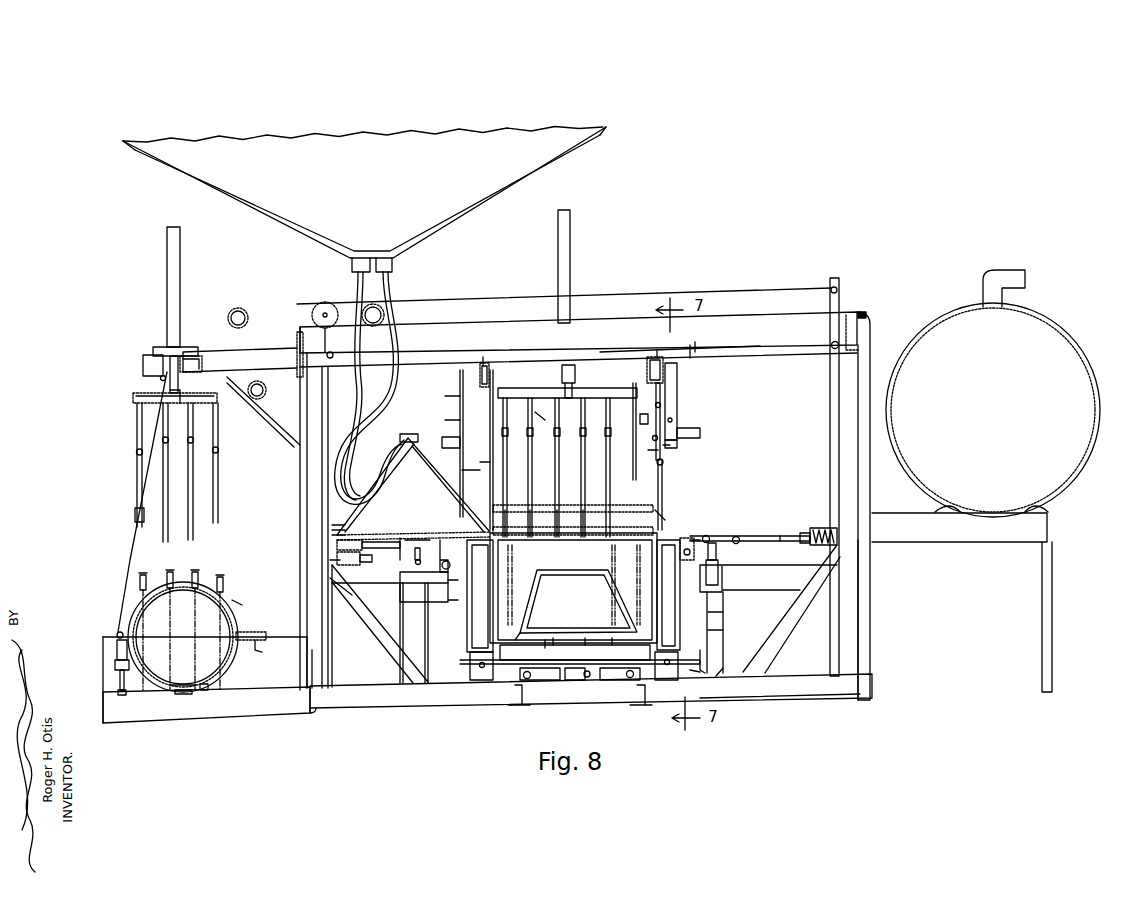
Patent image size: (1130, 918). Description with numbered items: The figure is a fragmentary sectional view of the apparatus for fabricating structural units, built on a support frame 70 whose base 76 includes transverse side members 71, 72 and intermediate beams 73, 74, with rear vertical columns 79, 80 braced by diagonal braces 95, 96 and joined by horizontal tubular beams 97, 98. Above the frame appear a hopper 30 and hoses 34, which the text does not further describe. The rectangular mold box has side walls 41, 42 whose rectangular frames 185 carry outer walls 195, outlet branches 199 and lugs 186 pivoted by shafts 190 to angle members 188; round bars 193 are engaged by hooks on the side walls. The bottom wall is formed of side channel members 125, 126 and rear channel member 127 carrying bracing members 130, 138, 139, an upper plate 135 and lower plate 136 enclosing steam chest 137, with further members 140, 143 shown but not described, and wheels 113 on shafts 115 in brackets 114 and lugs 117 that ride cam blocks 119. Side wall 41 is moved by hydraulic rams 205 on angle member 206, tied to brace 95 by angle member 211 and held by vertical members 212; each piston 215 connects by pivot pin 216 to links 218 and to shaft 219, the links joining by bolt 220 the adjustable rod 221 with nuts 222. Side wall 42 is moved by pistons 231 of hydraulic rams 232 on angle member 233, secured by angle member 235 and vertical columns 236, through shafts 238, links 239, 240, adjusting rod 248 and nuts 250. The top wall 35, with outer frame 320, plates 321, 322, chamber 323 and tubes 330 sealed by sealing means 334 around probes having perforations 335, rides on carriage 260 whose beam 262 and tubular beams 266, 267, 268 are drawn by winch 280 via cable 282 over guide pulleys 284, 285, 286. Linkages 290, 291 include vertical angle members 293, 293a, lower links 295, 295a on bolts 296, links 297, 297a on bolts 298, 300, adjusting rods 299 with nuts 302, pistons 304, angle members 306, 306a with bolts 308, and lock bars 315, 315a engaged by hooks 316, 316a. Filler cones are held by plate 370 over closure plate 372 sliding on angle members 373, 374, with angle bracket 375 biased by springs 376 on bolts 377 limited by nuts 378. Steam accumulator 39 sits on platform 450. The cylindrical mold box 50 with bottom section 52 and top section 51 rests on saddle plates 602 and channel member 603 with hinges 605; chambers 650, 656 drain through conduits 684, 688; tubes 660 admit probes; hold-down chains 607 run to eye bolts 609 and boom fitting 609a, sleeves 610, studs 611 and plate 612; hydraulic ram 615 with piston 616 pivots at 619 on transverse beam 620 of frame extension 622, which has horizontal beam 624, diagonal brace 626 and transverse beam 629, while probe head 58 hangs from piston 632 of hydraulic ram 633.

The hopper funnel 30 is at (568, 140).
The flexible hose 34 is at (388, 292).
The hydraulic ram 633 is at (181, 270).
The guide pulley 284 is at (840, 286).
The cable 282 is at (738, 290).
The longitudinal channel member 262 is at (604, 349).
The support frame 70 is at (868, 310).
The guide pulley 285 is at (862, 342).
The carriage 260 is at (710, 346).
The nut 302 is at (480, 358).
The winch 280 is at (325, 302).
The transverse beam 620 is at (158, 346).
The frame extension 622 is at (136, 353).
The transverse beam 629 is at (196, 346).
The piston 632 is at (190, 378).
The horizontal beam 624 is at (265, 352).
The pivot 619 is at (160, 380).
The probe head 58 is at (180, 395).
The guide pulley 286 is at (330, 360).
The diagonal brace 626 is at (276, 427).
The hydraulic ram 615 is at (128, 521).
The piston 616 is at (127, 566).
The hold-down chain 607 is at (155, 487).
The tube 660 is at (190, 485).
The chamber 656 is at (222, 552).
The cylindrical mold box 50 is at (158, 690).
The chamber 650 is at (182, 694).
The outlet conduit 684 is at (173, 690).
The bottom section 52 is at (206, 690).
The top semi-cylindrical section 51 is at (228, 600).
The flexible outlet conduit 688 is at (237, 603).
The hinge 605 is at (252, 633).
The transverse inverted channel member 603 is at (260, 650).
The valve pin 609a is at (116, 636).
The eye bolt 609 is at (116, 652).
The internally threaded sleeve 610 is at (116, 667).
The threaded stud 611 is at (120, 688).
The plate 612 is at (132, 696).
The saddle plate 602 is at (262, 690).
The side member 72 is at (873, 680).
The side member 71 is at (321, 719).
The base 76 is at (815, 708).
The rear vertical column 79 is at (306, 676).
The rear vertical column 80 is at (868, 652).
The diagonal brace 95 is at (370, 636).
The angle bracket 375 is at (335, 520).
The diagonal brace 96 is at (785, 638).
The angle member 235 is at (784, 580).
The outer wall 195 is at (709, 632).
The round bar 193 is at (723, 614).
The side wall 42 is at (723, 631).
The side channel member 126 is at (700, 660).
The angle member 188 is at (702, 680).
The vertical column 236 is at (722, 680).
The link 240 is at (745, 538).
The nut 250 is at (814, 528).
The horizontal tubular beam 98 is at (820, 528).
The adjusting rod 248 is at (778, 541).
The link 239 is at (705, 531).
The shaft 238 is at (736, 536).
The piston 231 is at (718, 552).
The hydraulic ram 232 is at (722, 575).
The horizontal transverse angle member 233 is at (722, 585).
The rectangular frame 185 is at (690, 520).
The top wall 35 is at (665, 535).
The steam accumulator 39 is at (1062, 337).
The platform 450 is at (1048, 527).
The plate 370 is at (440, 460).
The linkage 291 is at (449, 394).
The angle member 306a is at (458, 405).
The hook 316a is at (458, 420).
The link 297a is at (447, 447).
The vertical angle member 293a is at (465, 476).
The lower link 295a is at (485, 462).
The closure plate 372 is at (335, 545).
The horizontal angle member 373 is at (381, 548).
The horizontal angle member 374 is at (362, 562).
The spring 376 is at (332, 520).
The nut 378 is at (328, 524).
The bolt 377 is at (321, 535).
The horizontal tubular beam 97 is at (330, 562).
The adjustable rod 221 is at (340, 575).
The nut 222 is at (330, 578).
The bolt 220 is at (402, 540).
The link 218 is at (420, 532).
The pivot pin 216 is at (425, 545).
The horizontal angle member 211 is at (445, 545).
The shaft 219 is at (455, 570).
The piston 215 is at (435, 575).
The hydraulic ram 205 is at (428, 592).
The horizontal angle member 206 is at (450, 592).
The side wall 41 is at (455, 606).
The vertical member 212 is at (432, 684).
The outlet branch 199 is at (652, 572).
The upper plate 135 is at (570, 620).
The steam chest 137 is at (520, 620).
The plate 143 is at (548, 625).
The bracing member 138 is at (553, 635).
The bracing member 139 is at (584, 635).
The lower plate 136 is at (610, 635).
The side channel member 125 is at (575, 653).
The lug 186 is at (466, 648).
The shaft 190 is at (468, 666).
The cam block 119 is at (486, 682).
The lug 117 is at (664, 668).
The shaft 115 is at (540, 676).
The U-shaped bracket 114 is at (626, 674).
The rear channel member 127 is at (540, 683).
The block 140 is at (575, 664).
The lower bracing member 130 is at (590, 678).
The wheel 113 is at (628, 680).
The intermediate beam 73 is at (512, 700).
The intermediate beam 74 is at (634, 698).
The lock bar 315a is at (512, 398).
The perforation 335 is at (580, 462).
The sealing means 334 is at (552, 428).
The tube 330 is at (512, 520).
The chamber 323 is at (536, 520).
The lower plate 322 is at (562, 520).
The upper plate 321 is at (589, 520).
The transverse tubular beam 266 is at (492, 378).
The transverse tubular beam 267 is at (576, 374).
The transverse tubular beam 268 is at (666, 368).
The angle member 306 is at (678, 392).
The adjusting rod 299 is at (672, 384).
The link 297 is at (678, 406).
The hook 316 is at (680, 418).
The bolt 308 is at (682, 428).
The piston 304 is at (680, 444).
The linkage 290 is at (678, 455).
The bolt 296 is at (668, 463).
The vertical angle member 293 is at (664, 478).
The outer frame 320 is at (668, 510).
The bolt 300 is at (652, 405).
The lock bar 315 is at (640, 419).
The bolt 298 is at (652, 438).
The lower link 295 is at (648, 451).